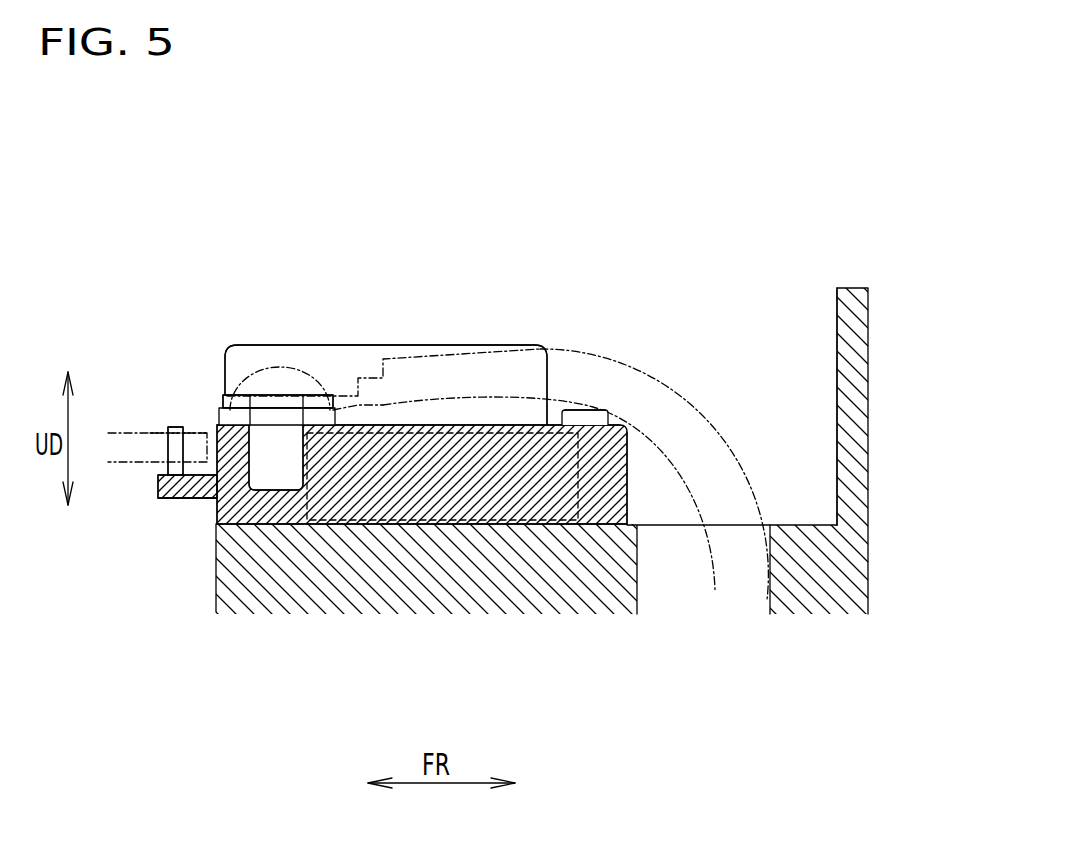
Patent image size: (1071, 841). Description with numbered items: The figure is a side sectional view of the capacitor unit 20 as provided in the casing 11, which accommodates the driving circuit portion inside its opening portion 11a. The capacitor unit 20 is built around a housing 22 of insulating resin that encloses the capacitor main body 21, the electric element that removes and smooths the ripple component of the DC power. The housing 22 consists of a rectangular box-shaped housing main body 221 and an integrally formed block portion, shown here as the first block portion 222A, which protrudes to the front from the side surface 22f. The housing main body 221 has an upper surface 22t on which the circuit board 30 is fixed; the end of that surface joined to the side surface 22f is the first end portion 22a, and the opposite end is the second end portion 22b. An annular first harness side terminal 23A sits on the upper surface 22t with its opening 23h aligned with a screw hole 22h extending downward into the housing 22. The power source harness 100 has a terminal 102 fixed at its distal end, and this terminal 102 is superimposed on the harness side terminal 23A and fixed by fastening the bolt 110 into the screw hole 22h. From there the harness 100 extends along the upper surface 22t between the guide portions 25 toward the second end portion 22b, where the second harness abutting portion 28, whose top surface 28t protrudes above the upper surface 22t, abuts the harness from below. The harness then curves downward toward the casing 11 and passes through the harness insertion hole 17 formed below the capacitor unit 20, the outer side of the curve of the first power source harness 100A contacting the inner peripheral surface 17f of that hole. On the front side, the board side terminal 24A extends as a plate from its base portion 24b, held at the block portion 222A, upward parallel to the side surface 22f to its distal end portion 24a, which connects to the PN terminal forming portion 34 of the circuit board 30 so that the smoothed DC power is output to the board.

The casing 11 is at (868, 328).
The opening portion 11a is at (837, 330).
The harness insertion hole 17 is at (637, 573).
The inner peripheral surface 17f is at (770, 580).
The capacitor unit 20 is at (469, 333).
The capacitor main body 21 is at (450, 522).
The housing 22 is at (422, 474).
The first end portion 22a is at (217, 433).
The second end portion 22b is at (627, 424).
The side surface 22f is at (217, 517).
The screw hole 22h is at (253, 490).
The upper surface 22t is at (405, 424).
The housing main body 221 is at (607, 523).
The first block portion 222A is at (172, 499).
The first harness side terminal 23A is at (222, 410).
The opening 23h is at (258, 410).
The board side terminal 24A is at (167, 456).
The distal end portion 24a is at (183, 430).
The base portion 24b is at (158, 475).
The guide portion 25 is at (377, 345).
The second harness abutting portion 28 is at (597, 410).
The top surface 28t is at (608, 410).
The circuit board 30 is at (112, 420).
The PN terminal forming portion 34 is at (163, 433).
The power source harness 100 is at (518, 347).
The first power source harness 100A is at (583, 408).
The terminal 102 is at (318, 396).
The bolt 110 is at (302, 362).